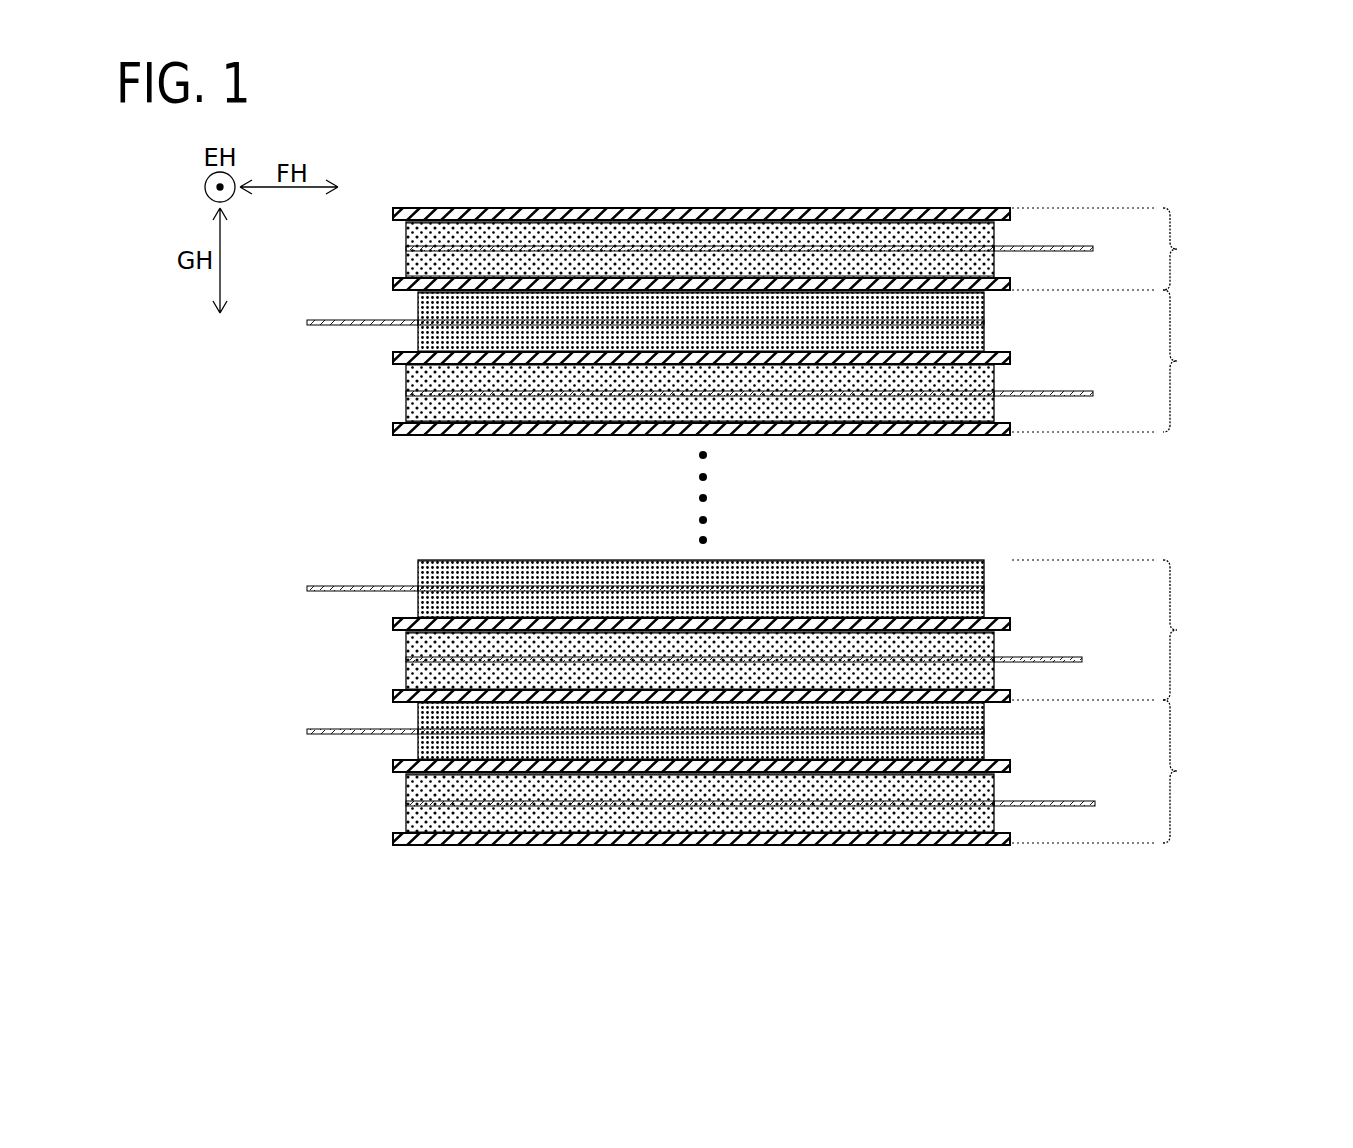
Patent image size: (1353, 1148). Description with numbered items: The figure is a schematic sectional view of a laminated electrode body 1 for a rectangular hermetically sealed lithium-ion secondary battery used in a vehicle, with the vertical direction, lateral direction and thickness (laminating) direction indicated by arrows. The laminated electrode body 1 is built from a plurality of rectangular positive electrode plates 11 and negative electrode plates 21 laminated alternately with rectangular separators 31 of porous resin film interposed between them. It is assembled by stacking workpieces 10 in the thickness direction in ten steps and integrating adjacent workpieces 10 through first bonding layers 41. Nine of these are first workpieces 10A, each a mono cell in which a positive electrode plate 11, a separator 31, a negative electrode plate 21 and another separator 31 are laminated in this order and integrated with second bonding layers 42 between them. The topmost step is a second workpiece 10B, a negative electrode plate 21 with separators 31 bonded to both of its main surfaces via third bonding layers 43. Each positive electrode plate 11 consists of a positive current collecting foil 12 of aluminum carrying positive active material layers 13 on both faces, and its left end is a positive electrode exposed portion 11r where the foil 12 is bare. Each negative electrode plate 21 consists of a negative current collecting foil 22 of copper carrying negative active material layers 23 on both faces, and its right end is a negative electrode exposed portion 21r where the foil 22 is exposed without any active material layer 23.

The laminated electrode body 1 is at (1028, 186).
The workpiece 10 is at (1149, 525).
The first workpiece 10A is at (1225, 566).
The second workpiece 10B is at (1225, 249).
The positive electrode plate 11 is at (645, 617).
The positive electrode exposed portion 11r is at (330, 326).
The positive current collecting foil 12 is at (565, 742).
The positive active material layer 13 is at (610, 720).
The negative electrode plate 21 is at (780, 511).
The negative electrode exposed portion 21r is at (1060, 248).
The negative current collecting foil 22 is at (700, 240).
The negative active material layer 23 is at (775, 265).
The separator 31 is at (620, 209).
The first bonding layer 41 is at (555, 288).
The second bonding layer 42 is at (683, 773).
The third bonding layer 43 is at (490, 277).